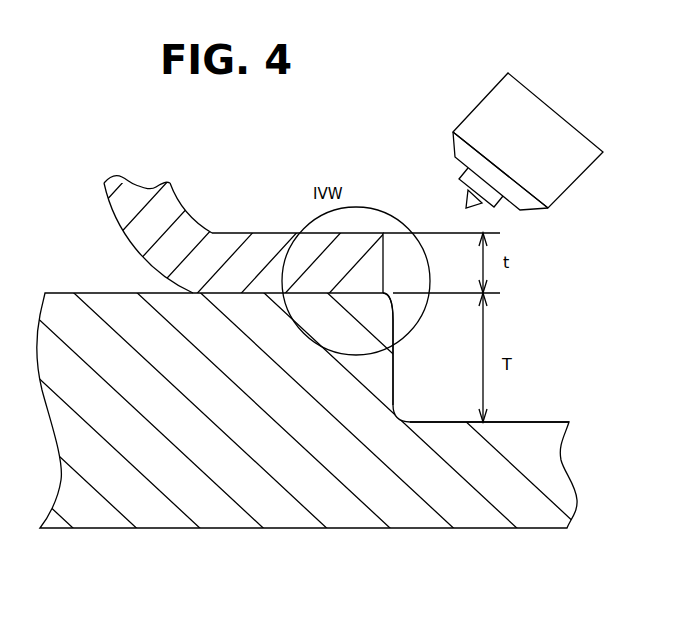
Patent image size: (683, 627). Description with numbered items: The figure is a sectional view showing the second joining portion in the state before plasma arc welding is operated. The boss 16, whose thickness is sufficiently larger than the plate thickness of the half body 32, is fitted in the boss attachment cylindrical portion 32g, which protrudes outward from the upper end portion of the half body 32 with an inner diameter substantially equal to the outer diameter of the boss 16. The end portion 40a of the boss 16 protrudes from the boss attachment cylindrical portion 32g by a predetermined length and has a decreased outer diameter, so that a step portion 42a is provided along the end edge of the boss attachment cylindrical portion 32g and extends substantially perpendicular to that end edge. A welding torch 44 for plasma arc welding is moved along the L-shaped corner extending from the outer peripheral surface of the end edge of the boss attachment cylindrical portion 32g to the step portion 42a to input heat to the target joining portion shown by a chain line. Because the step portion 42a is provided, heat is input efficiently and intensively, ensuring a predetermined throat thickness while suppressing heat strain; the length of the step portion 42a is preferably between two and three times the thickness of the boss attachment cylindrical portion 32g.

The boss 16 is at (194, 498).
The half body 32 is at (130, 211).
The boss attachment cylindrical portion 32g is at (243, 262).
The end portion 40a is at (518, 443).
The step portion 42a is at (394, 392).
The welding torch 44 is at (535, 132).